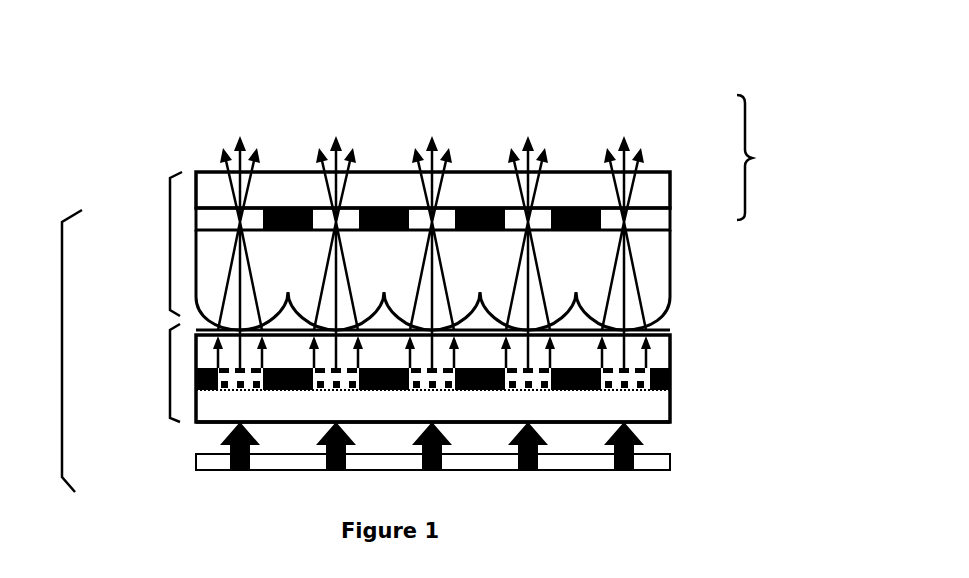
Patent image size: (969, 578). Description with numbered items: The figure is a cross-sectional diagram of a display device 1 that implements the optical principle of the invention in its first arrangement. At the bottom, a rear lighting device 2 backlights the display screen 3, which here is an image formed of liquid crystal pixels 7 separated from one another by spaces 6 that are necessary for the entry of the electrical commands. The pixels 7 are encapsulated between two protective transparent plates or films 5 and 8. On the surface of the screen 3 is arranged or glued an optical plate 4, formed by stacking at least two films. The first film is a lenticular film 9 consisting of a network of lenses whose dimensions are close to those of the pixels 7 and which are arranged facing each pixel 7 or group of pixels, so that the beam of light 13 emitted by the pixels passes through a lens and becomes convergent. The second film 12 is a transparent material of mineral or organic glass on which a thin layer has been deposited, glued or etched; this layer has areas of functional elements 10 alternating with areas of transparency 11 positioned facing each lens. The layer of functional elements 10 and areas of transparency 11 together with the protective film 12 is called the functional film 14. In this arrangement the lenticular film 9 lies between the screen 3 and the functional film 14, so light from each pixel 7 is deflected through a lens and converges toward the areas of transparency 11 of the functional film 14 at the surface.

The display device 1 is at (48, 340).
The rear lighting device 2 is at (196, 460).
The display screen 3 is at (150, 375).
The optical plate 4 is at (150, 247).
The protective transparent plate 5 is at (647, 413).
The spaces 6 is at (583, 393).
The pixels 7 is at (637, 378).
The protective transparent plate 8 is at (660, 353).
The lenticular film 9 is at (655, 279).
The functional elements 10 is at (572, 232).
The areas of transparency 11 is at (642, 223).
The second film 12 is at (653, 188).
The beam of light 13 is at (238, 143).
The functional film 14 is at (768, 157).